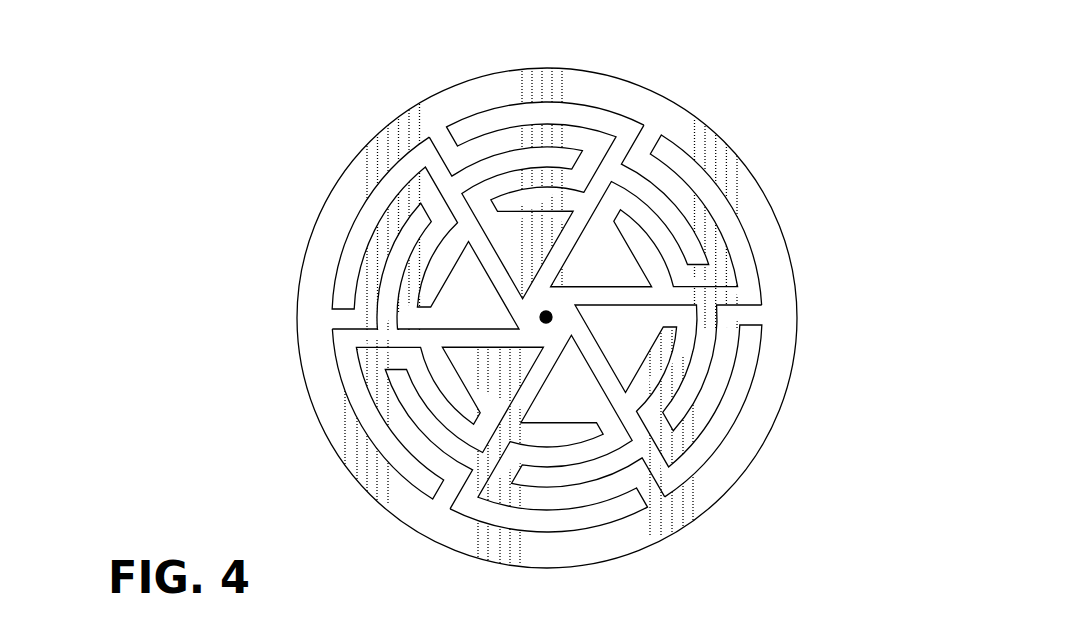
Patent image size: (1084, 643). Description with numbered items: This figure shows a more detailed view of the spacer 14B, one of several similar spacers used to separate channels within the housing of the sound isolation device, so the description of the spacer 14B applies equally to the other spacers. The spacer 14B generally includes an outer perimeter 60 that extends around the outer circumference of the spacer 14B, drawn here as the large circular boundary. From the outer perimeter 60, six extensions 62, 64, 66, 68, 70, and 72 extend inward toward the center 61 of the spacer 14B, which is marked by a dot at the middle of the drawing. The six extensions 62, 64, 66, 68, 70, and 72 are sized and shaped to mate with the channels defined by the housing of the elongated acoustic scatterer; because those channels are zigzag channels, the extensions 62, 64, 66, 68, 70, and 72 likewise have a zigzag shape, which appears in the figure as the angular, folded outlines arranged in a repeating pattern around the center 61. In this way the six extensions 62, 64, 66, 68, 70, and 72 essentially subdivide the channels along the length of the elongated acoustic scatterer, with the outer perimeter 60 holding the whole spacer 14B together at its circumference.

The spacer 14B is at (797, 113).
The outer perimeter 60 is at (770, 238).
The center 61 is at (548, 325).
The extension 62 is at (492, 140).
The extension 64 is at (668, 170).
The extension 66 is at (725, 358).
The extension 68 is at (618, 483).
The extension 70 is at (364, 359).
The extension 72 is at (423, 193).